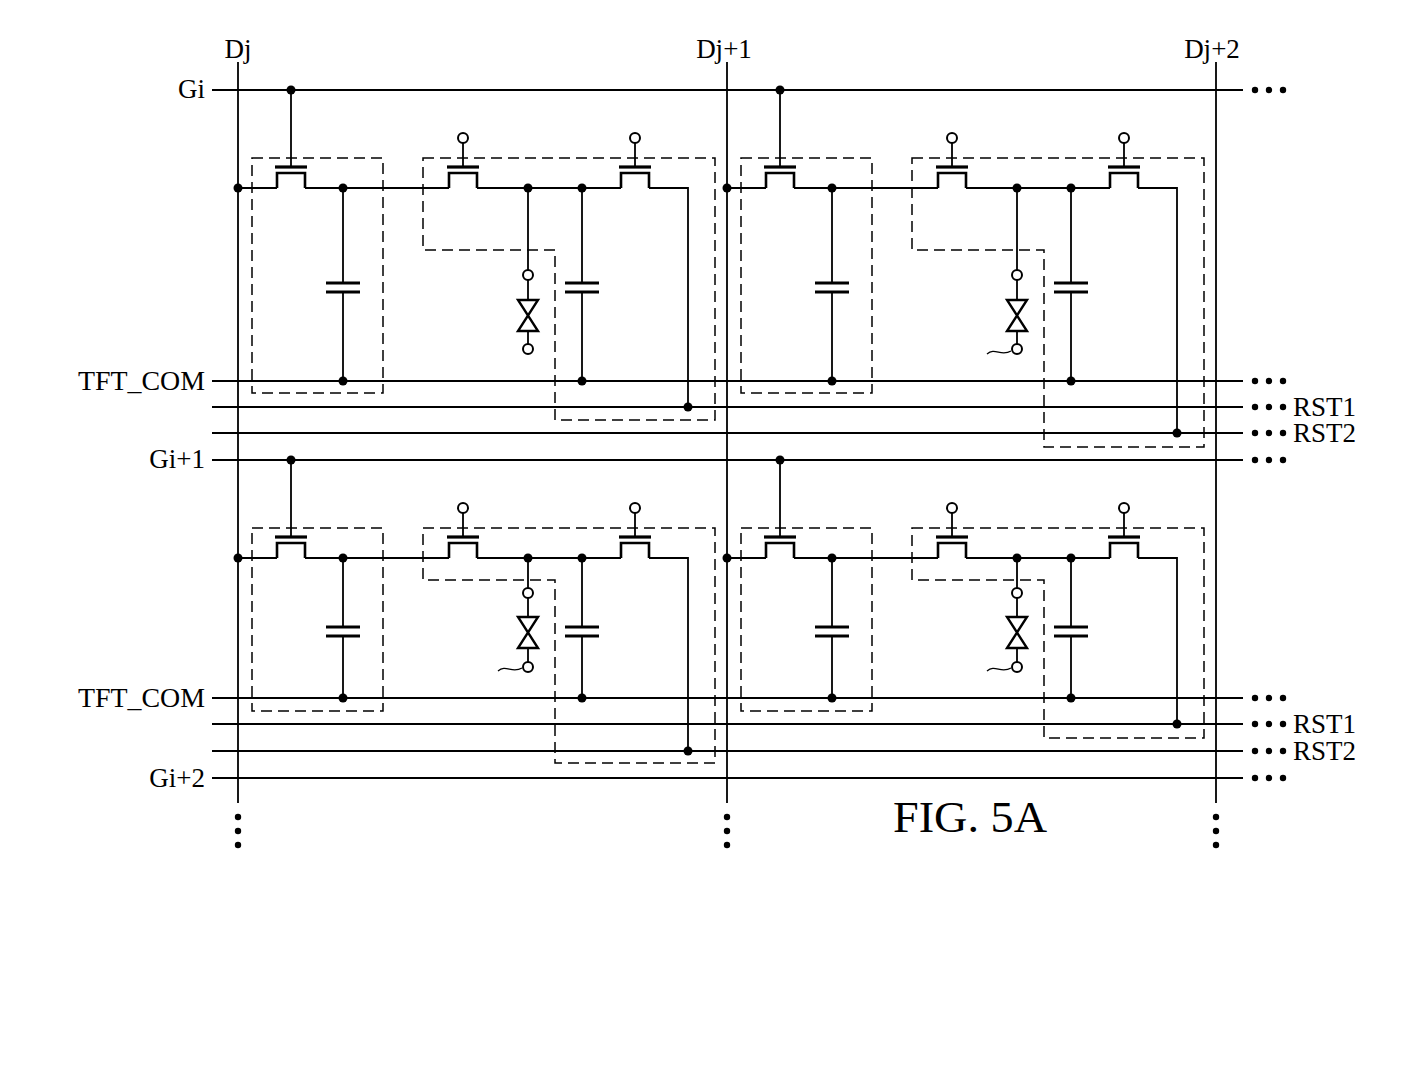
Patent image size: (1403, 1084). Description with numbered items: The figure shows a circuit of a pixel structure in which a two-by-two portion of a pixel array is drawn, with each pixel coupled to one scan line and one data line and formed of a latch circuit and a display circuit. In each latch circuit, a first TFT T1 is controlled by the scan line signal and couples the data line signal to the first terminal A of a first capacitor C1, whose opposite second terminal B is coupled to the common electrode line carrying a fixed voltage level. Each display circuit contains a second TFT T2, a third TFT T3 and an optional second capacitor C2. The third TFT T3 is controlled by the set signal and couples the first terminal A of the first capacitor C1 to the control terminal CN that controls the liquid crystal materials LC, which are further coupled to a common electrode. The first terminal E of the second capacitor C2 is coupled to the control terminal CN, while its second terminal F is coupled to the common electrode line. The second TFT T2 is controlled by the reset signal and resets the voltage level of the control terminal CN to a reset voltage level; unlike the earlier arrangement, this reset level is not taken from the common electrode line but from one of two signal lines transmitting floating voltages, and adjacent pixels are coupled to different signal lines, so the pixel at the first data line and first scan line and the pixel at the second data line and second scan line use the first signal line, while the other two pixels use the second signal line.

The first TFT T1 is at (292, 194).
The second TFT T2 is at (636, 194).
The third TFT T3 is at (464, 194).
The first capacitor C1 is at (326, 286).
The second capacitor C2 is at (603, 289).
The liquid crystal materials LC is at (517, 315).
The control terminal CN is at (522, 277).
The first terminal A is at (345, 193).
The second terminal B is at (347, 375).
The first terminal E is at (580, 193).
The second terminal F is at (586, 375).